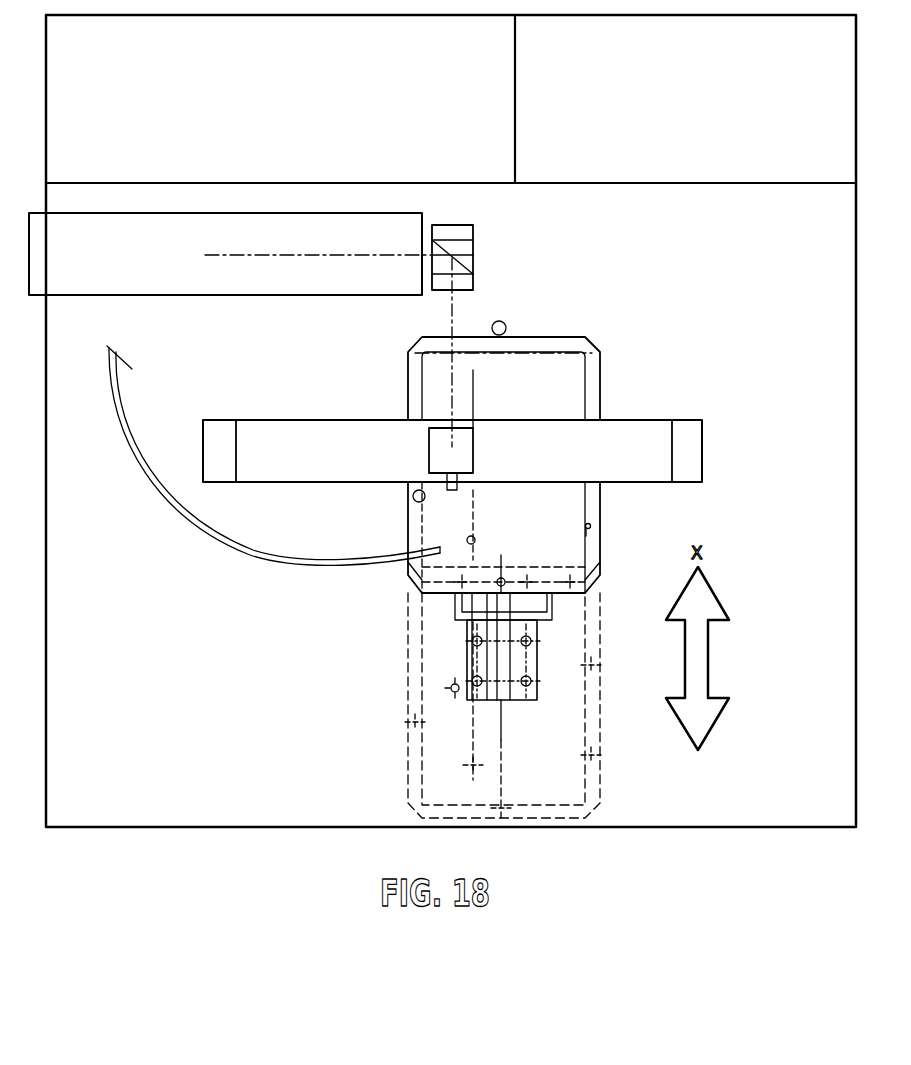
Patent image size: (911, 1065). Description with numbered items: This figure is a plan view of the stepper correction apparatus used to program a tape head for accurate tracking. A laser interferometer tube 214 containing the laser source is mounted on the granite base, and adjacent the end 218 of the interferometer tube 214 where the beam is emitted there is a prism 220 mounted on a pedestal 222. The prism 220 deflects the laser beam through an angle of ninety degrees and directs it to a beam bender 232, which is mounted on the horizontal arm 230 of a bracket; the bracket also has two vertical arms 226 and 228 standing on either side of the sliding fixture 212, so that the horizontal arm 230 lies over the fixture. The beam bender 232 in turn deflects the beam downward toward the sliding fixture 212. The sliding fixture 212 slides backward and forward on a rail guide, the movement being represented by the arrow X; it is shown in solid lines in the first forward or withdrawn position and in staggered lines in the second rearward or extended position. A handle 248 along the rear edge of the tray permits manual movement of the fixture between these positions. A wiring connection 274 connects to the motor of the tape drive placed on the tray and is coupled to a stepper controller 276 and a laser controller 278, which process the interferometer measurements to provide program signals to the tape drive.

The sliding fixture 212 is at (600, 395).
The laser interferometer tube 214 is at (157, 229).
The end of the interferometer tube 218 is at (423, 227).
The prism 220 is at (473, 257).
The pedestal 222 is at (461, 228).
The vertical arm 226 is at (216, 427).
The vertical arm 228 is at (688, 448).
The horizontal arm 230 is at (633, 473).
The beam bender 232 is at (438, 440).
The handle 248 is at (455, 612).
The wiring connection 274 is at (198, 530).
The stepper controller 276 is at (280, 99).
The laser controller 278 is at (685, 142).